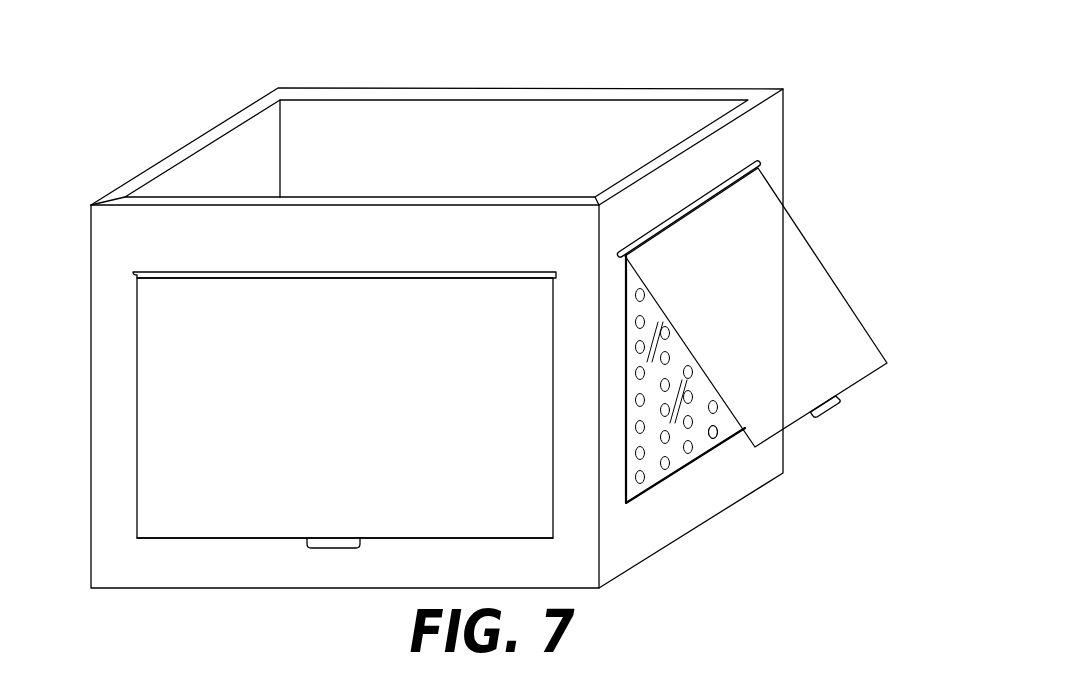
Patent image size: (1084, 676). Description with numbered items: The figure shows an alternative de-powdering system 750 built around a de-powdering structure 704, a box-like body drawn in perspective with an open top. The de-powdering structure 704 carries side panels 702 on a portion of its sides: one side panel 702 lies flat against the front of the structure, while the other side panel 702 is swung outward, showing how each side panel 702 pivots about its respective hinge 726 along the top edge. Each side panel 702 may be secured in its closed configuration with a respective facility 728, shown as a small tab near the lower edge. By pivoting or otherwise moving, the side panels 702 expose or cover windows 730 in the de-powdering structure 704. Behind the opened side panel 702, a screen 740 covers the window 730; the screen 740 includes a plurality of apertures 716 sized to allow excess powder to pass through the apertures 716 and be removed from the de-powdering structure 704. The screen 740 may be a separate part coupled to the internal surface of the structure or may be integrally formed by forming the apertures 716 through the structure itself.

The de-powdering system 750 is at (842, 55).
The de-powdering structure 704 is at (92, 448).
The side panel 702 is at (178, 520).
The hinge 726 is at (150, 272).
The facility 728 is at (353, 547).
The window 730 is at (272, 540).
The aperture 716 is at (665, 467).
The screen 740 is at (705, 442).